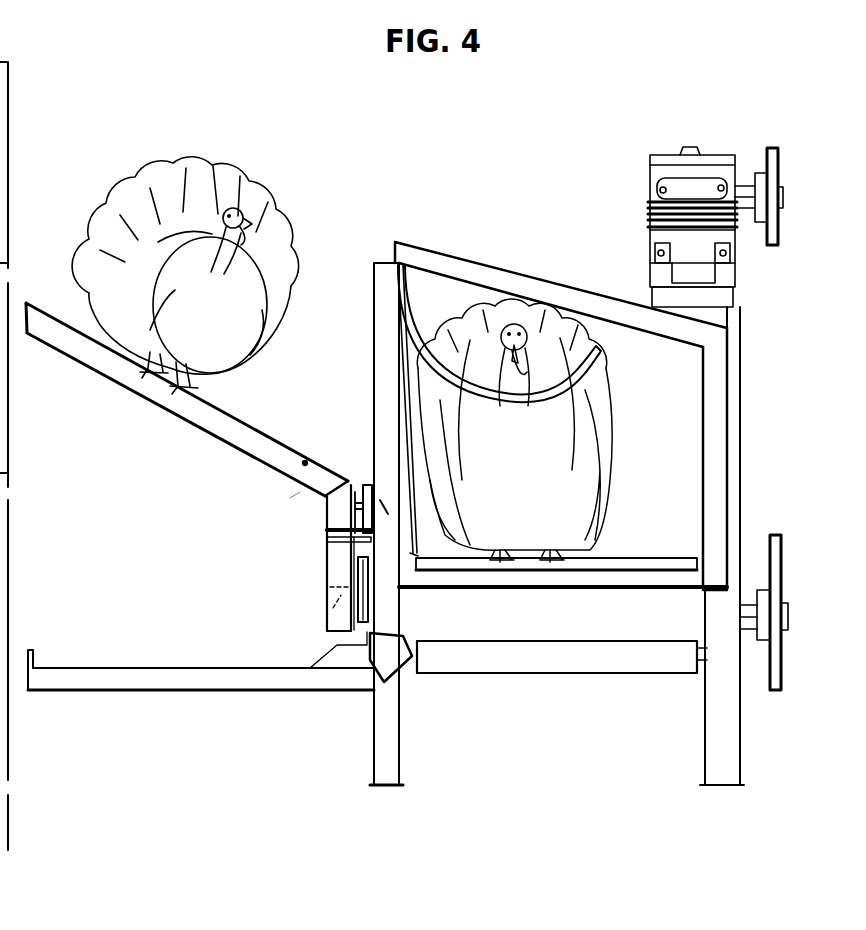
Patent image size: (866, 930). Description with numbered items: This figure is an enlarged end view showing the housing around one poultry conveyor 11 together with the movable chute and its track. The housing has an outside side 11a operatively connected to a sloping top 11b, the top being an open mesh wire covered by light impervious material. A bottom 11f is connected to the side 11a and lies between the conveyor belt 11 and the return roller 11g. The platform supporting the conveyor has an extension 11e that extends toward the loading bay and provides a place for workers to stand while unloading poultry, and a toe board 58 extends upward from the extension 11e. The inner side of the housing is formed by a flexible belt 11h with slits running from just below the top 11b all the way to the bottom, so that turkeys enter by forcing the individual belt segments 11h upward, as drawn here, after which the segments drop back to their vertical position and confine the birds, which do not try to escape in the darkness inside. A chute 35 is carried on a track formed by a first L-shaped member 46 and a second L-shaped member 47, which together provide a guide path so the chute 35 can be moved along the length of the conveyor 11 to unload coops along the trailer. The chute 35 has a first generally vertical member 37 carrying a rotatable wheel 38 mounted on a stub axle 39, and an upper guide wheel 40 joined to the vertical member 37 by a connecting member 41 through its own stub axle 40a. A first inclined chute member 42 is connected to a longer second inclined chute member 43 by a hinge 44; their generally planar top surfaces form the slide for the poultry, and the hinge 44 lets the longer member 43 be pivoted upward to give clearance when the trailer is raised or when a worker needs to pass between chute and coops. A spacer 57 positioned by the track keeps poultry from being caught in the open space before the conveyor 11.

The conveyor 11 is at (643, 558).
The outside side 11a is at (718, 450).
The sloping top 11b is at (568, 308).
The extension 11e is at (167, 683).
The bottom 11f is at (555, 590).
The return roller 11g is at (557, 665).
The belt 11h is at (413, 327).
The chute 35 is at (283, 508).
The first generally vertical member 37 is at (338, 568).
The rotatable wheel 38 is at (362, 588).
The stub axle 39 is at (325, 607).
The upper guide wheel 40 is at (370, 497).
The stub axle 40a is at (350, 543).
The connecting member 41 is at (333, 530).
The first inclined chute member 42 is at (305, 462).
The second inclined chute member 43 is at (226, 422).
The hinge 44 is at (302, 466).
The first L-shaped member 46 is at (361, 500).
The second L-shaped member 47 is at (361, 657).
The spacer 57 is at (392, 511).
The toe board 58 is at (32, 654).